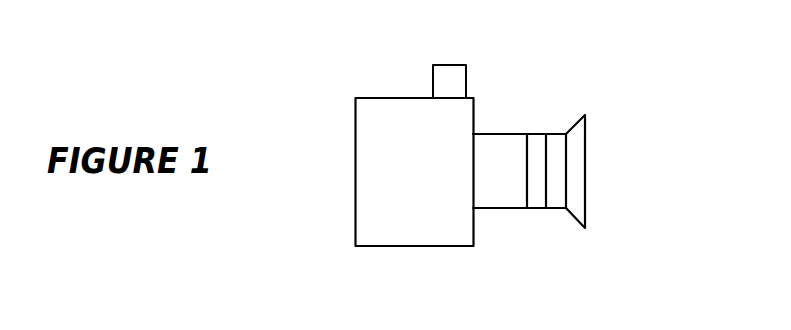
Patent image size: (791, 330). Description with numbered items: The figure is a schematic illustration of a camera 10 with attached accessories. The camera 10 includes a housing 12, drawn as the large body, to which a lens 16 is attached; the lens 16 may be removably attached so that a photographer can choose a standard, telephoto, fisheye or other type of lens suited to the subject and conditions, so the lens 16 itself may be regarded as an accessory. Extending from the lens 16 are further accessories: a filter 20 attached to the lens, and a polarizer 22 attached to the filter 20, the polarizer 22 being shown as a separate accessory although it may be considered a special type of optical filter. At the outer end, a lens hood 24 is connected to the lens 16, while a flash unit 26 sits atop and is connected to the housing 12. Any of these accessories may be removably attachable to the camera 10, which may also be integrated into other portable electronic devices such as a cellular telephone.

The camera 10 is at (563, 62).
The housing 12 is at (383, 98).
The lens 16 is at (498, 134).
The filter 20 is at (535, 208).
The polarizer 22 is at (553, 208).
The lens hood 24 is at (585, 148).
The flash unit 26 is at (450, 64).